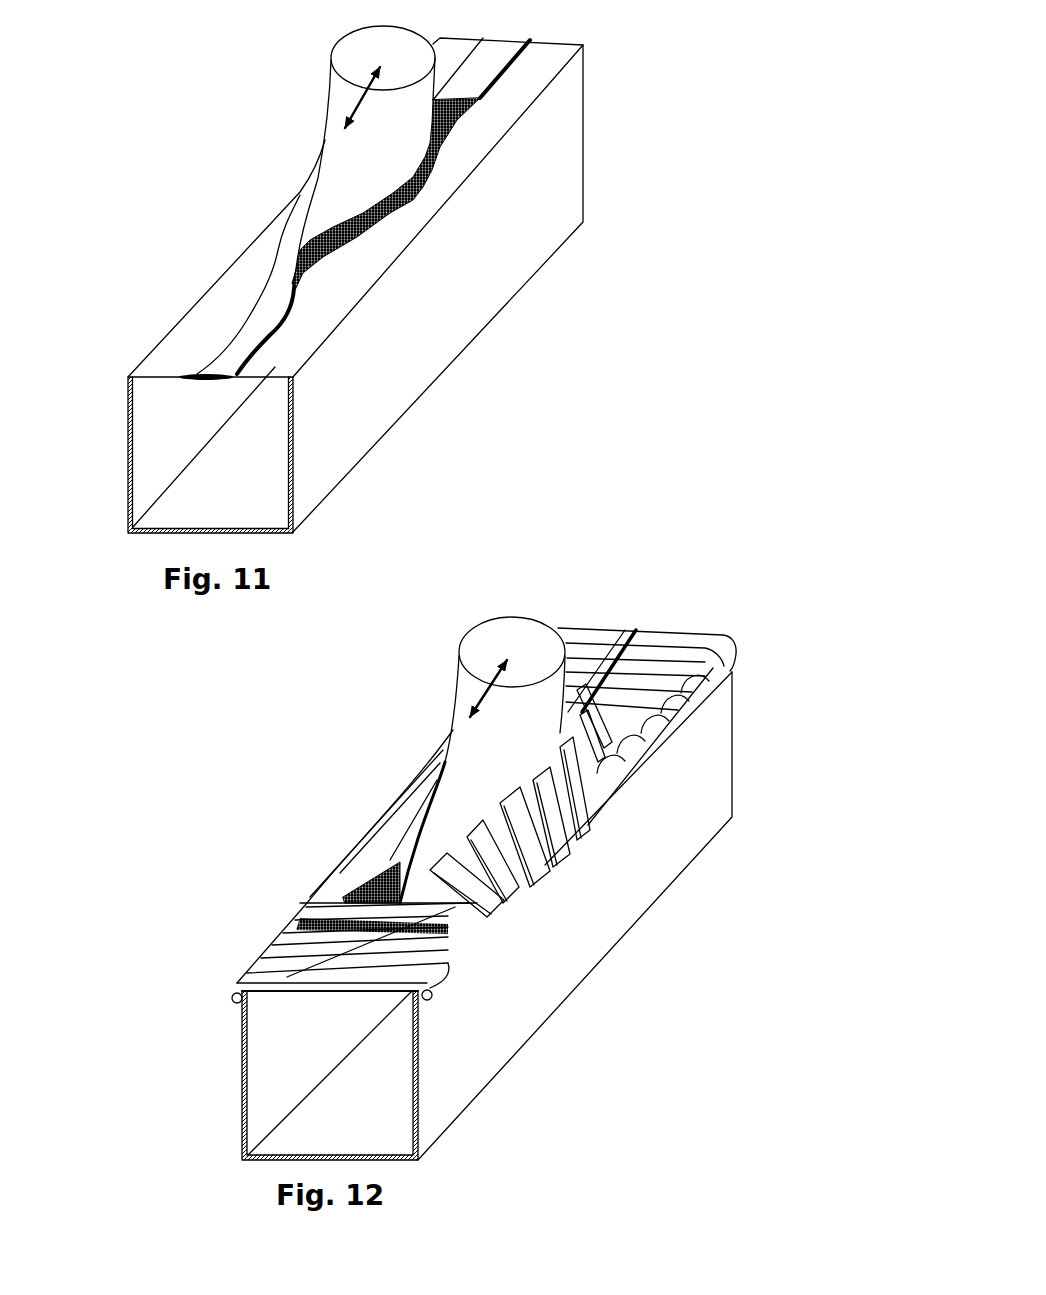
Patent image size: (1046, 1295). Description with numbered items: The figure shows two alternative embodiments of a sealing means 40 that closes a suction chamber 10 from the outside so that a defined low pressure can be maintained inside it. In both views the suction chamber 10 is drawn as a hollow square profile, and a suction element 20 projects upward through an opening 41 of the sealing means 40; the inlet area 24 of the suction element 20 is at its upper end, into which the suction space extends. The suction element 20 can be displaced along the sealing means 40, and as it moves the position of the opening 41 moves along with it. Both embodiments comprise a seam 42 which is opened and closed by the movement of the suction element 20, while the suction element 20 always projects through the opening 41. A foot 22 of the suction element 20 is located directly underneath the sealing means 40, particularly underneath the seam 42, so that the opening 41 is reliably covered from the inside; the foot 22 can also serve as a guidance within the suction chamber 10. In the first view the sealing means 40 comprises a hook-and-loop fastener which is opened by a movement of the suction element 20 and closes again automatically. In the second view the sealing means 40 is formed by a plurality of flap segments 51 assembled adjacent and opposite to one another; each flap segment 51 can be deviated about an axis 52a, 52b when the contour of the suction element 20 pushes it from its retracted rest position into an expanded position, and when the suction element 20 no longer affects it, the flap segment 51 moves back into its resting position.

In FIG. 11, the suction chamber 10 is at (333, 413).
In FIG. 12, the suction chamber 10 is at (457, 1057).
In FIG. 11, the suction element 20 is at (322, 142).
In FIG. 12, the suction element 20 is at (452, 718).
In FIG. 11, the foot 22 is at (452, 97).
In FIG. 12, the foot 22 is at (350, 893).
In FIG. 11, the inlet area 24 is at (333, 63).
In FIG. 12, the inlet area 24 is at (470, 647).
In FIG. 11, the sealing means 40 is at (197, 343).
In FIG. 12, the sealing means 40 is at (413, 787).
In FIG. 11, the opening 41 is at (353, 193).
In FIG. 12, the opening 41 is at (510, 762).
In FIG. 11, the seam 42 is at (197, 393).
In FIG. 12, the seam 42 is at (325, 1003).
In FIG. 12, the flap segment 51 is at (390, 946).
In FIG. 12, the axis 52a is at (431, 998).
In FIG. 12, the axis 52b is at (234, 994).